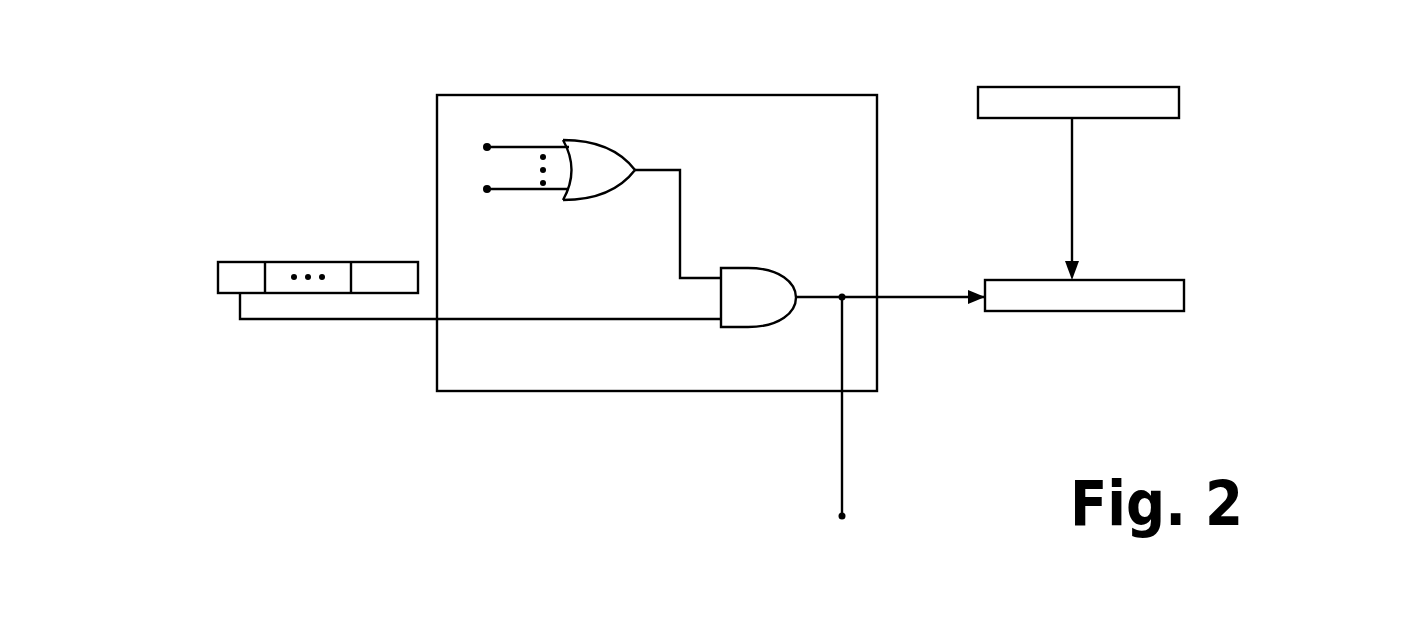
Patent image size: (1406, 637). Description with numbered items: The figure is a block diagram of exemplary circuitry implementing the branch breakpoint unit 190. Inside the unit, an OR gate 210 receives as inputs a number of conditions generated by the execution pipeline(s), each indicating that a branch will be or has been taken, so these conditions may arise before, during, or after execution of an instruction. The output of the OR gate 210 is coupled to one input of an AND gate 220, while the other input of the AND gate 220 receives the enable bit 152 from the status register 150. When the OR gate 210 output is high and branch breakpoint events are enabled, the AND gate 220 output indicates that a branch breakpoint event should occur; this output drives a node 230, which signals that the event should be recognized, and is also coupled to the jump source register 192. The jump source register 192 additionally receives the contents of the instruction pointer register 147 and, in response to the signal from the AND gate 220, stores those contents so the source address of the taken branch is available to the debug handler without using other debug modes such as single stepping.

The branch breakpoint unit 190 is at (455, 80).
The OR gate 210 is at (598, 140).
The AND gate 220 is at (762, 270).
The node 230 is at (838, 518).
The status register 150 is at (262, 246).
The enable bit 152 is at (473, 294).
The instruction pointer register 147 is at (1163, 68).
The jump source register 192 is at (1117, 260).